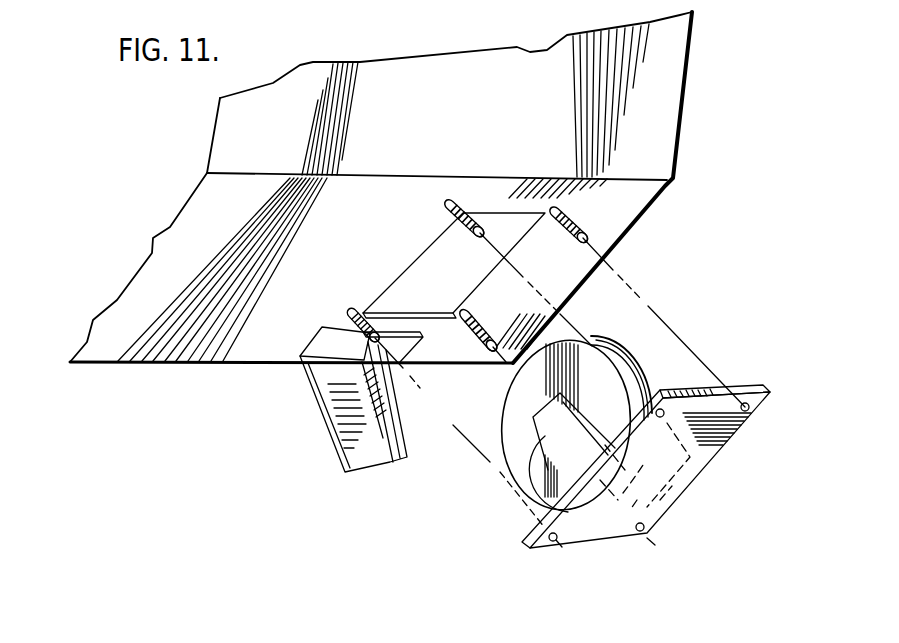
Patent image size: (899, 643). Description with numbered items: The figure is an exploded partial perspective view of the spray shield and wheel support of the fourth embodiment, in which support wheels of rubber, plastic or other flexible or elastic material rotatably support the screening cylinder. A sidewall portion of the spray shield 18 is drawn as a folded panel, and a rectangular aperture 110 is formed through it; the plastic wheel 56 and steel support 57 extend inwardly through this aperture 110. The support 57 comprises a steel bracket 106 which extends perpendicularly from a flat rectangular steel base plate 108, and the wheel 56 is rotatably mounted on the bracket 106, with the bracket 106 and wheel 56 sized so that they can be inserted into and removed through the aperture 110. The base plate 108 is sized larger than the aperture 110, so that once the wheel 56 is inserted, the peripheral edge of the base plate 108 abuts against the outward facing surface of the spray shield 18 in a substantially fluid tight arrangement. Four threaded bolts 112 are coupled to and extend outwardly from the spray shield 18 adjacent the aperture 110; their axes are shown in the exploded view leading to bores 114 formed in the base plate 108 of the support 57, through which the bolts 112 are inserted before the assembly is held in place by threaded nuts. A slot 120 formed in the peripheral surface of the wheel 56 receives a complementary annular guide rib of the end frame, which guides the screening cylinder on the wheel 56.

The spray shield 18 is at (505, 88).
The rectangular aperture 110 is at (502, 228).
The threaded bolts 112 is at (450, 222).
The slot 120 is at (640, 360).
The plastic wheel 56 is at (520, 418).
The steel bracket 106 is at (532, 478).
The steel support 57 is at (720, 400).
The bores 114 is at (750, 410).
The base plate 108 is at (685, 487).